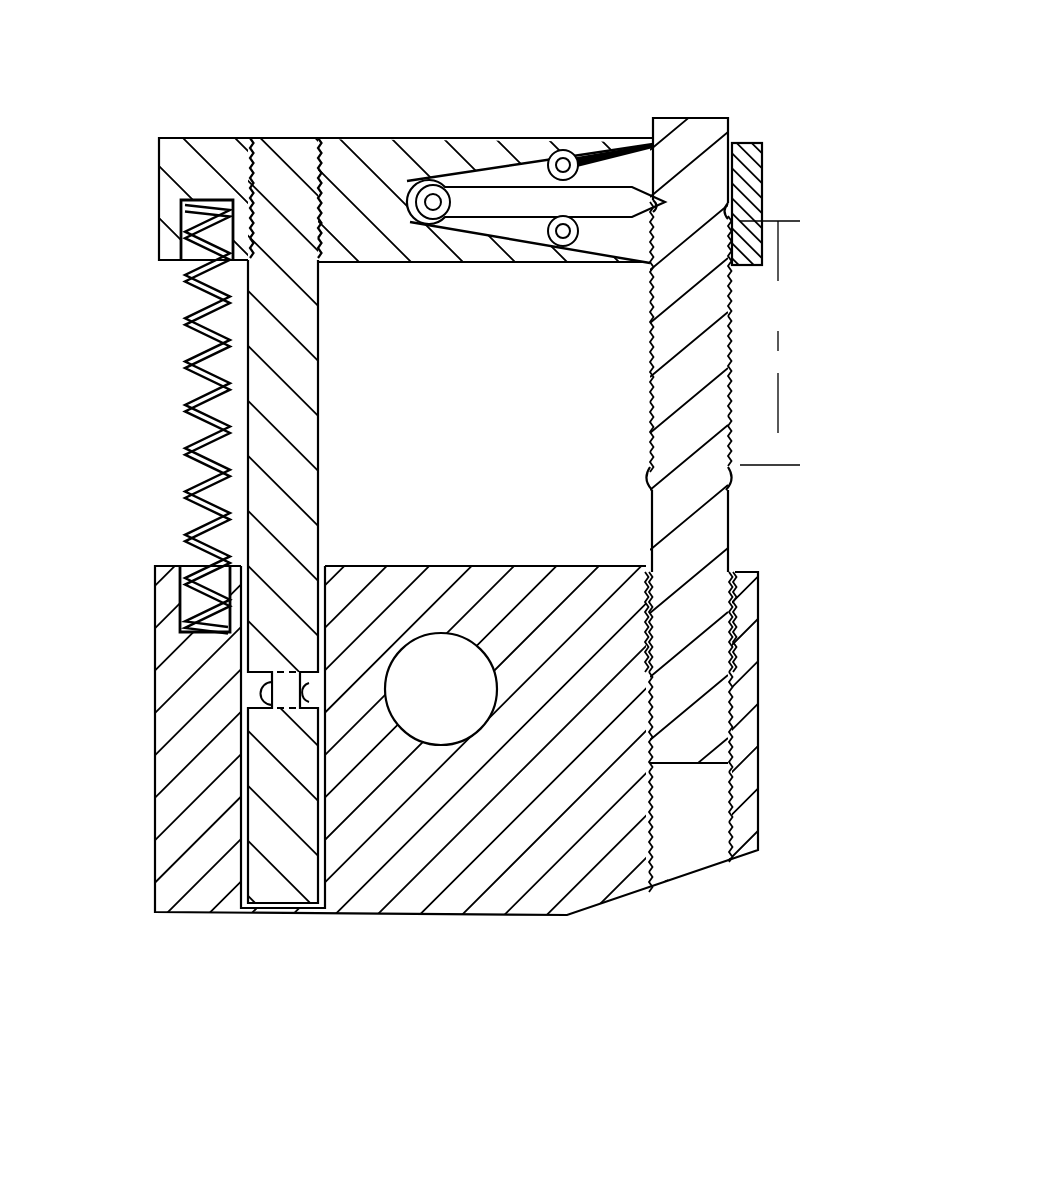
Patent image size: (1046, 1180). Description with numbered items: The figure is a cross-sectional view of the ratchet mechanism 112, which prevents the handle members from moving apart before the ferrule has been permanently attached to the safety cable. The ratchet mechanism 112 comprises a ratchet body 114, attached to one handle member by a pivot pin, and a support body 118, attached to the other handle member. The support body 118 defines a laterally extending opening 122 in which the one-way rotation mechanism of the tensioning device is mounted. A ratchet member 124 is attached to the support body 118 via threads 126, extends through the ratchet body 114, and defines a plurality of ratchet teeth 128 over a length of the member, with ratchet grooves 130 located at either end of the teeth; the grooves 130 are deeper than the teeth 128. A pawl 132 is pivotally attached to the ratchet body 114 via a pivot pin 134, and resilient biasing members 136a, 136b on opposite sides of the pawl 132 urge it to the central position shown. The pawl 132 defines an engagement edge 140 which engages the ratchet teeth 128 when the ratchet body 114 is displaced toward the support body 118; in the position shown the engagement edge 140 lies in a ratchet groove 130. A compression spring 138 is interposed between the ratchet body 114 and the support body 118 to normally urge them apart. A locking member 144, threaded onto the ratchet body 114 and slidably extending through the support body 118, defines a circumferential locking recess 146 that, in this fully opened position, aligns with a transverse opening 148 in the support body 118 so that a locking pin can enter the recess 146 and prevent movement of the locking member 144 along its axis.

The ratchet mechanism 112 is at (301, 102).
The ratchet body 114 is at (432, 156).
The support body 118 is at (507, 890).
The laterally extending opening 122 is at (437, 653).
The ratchet member 124 is at (523, 446).
The threads 126 is at (733, 800).
The ratchet teeth 128 is at (650, 408).
The ratchet grooves 130 is at (768, 196).
The pawl 132 is at (585, 190).
The pivot pin 134 is at (436, 216).
The resilient biasing member 136a is at (548, 152).
The resilient biasing member 136b is at (565, 248).
The compression spring 138 is at (187, 404).
The engagement edge 140 is at (668, 200).
The locking member 144 is at (305, 446).
The circumferential locking recess 146 is at (247, 683).
The transverse opening 148 is at (260, 690).